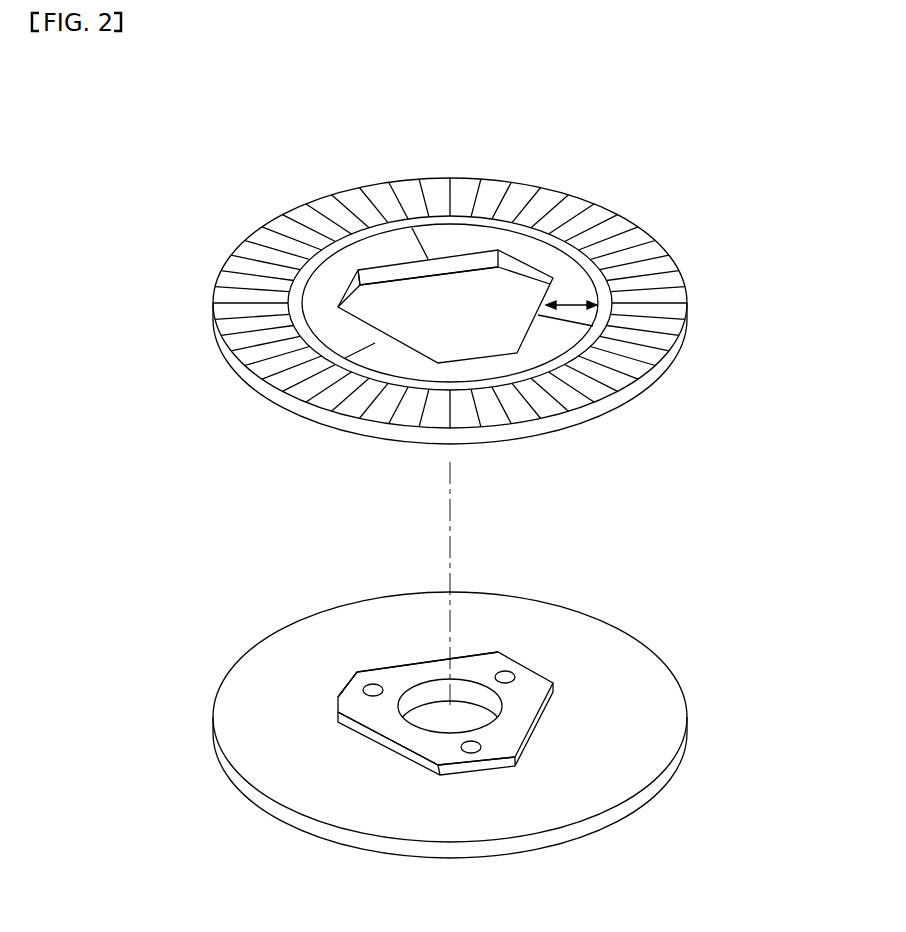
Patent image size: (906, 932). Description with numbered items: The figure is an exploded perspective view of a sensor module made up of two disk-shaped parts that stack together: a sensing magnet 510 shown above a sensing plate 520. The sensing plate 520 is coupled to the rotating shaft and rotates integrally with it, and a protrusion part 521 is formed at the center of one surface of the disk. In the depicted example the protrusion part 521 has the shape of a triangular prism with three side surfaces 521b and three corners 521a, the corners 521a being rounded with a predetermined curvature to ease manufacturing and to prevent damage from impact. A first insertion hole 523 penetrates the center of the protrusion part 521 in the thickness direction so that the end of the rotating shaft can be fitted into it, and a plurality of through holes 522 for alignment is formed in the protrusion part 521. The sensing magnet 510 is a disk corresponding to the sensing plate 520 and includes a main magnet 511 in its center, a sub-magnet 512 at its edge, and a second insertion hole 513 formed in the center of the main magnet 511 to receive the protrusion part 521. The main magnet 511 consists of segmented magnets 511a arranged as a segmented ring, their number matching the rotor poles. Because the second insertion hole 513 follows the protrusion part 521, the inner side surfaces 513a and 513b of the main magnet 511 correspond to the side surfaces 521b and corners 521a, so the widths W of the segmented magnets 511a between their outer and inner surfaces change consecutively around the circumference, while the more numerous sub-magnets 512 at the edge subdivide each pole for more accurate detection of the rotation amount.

The sensing magnet 510 is at (718, 289).
The main magnet 511 is at (450, 242).
The segmented magnets 511a is at (372, 258).
The sub-magnet 512 is at (665, 312).
The second insertion hole 513 is at (472, 300).
The inner side surface 513a is at (356, 272).
The inner side surface 513b is at (385, 245).
The width W is at (572, 300).
The sensing plate 520 is at (716, 708).
The protrusion part 521 is at (473, 662).
The corners 521a is at (338, 684).
The side surfaces 521b is at (398, 658).
The through holes 522 is at (505, 668).
The first insertion hole 523 is at (505, 700).